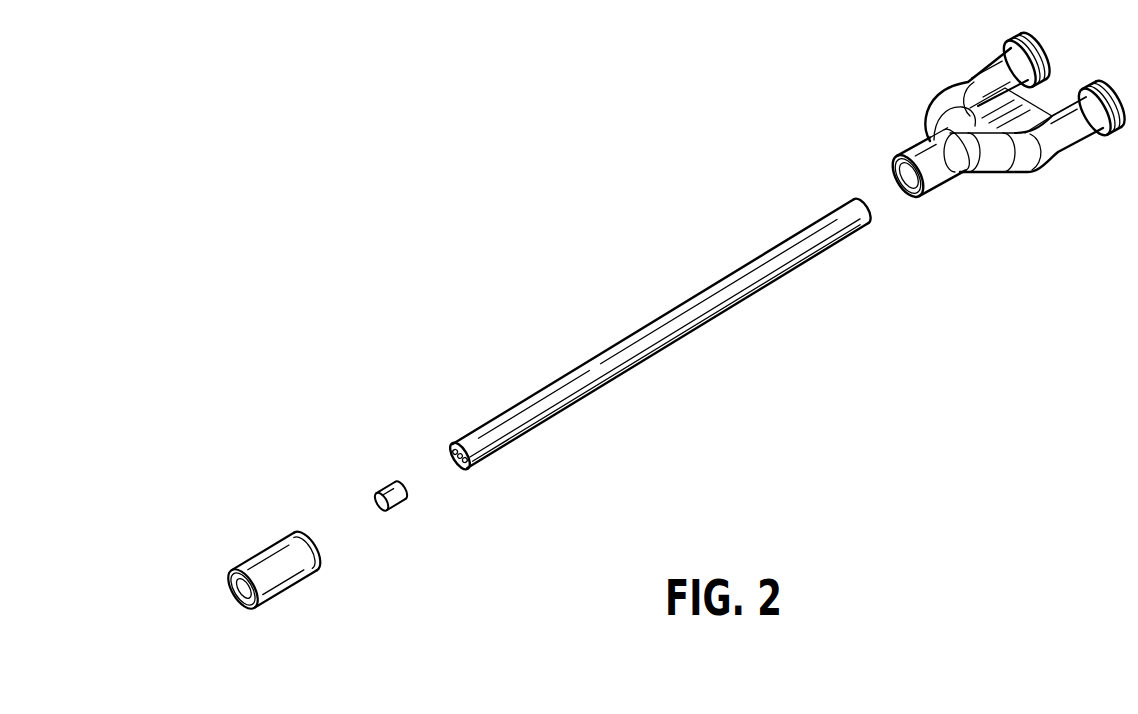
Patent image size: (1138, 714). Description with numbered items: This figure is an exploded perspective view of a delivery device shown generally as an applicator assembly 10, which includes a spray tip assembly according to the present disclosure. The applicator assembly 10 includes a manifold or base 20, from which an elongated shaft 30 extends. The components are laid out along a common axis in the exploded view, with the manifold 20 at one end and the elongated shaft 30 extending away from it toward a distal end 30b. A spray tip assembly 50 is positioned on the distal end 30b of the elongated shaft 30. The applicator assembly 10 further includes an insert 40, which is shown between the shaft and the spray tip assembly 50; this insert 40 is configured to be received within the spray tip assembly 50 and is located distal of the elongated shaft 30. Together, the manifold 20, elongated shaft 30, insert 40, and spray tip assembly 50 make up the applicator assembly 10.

The applicator assembly 10 is at (602, 193).
The manifold or base 20 is at (938, 82).
The elongated shaft 30 is at (660, 308).
The distal end 30b is at (447, 447).
The insert 40 is at (373, 482).
The spray tip assembly 50 is at (258, 545).